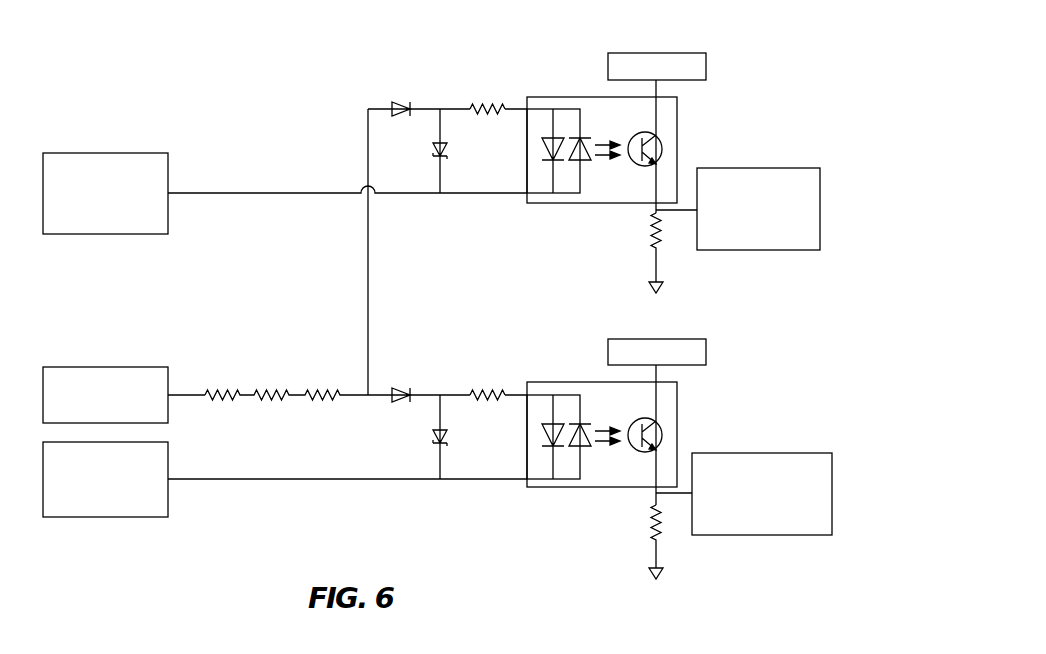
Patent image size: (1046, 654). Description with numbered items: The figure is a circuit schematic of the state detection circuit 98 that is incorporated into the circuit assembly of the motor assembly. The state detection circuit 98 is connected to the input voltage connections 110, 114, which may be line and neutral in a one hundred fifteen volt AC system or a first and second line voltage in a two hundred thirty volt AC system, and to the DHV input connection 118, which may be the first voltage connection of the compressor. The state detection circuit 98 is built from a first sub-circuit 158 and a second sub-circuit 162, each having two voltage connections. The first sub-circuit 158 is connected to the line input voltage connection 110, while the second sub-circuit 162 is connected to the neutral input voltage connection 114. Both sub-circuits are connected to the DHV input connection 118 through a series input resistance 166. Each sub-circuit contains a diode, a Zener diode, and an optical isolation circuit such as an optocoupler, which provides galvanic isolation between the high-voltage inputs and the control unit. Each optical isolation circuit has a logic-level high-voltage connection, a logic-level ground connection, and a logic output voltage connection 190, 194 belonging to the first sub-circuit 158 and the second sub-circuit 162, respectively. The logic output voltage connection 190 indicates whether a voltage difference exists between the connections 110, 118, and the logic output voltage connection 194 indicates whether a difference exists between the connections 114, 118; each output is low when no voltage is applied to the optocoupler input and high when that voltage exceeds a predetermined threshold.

The state detection circuit 98 is at (138, 88).
The input voltage connection 110 is at (93, 506).
The input voltage connection 114 is at (125, 164).
The DHV input connection 118 is at (70, 373).
The first sub-circuit 158 is at (742, 345).
The second sub-circuit 162 is at (780, 67).
The series input resistance 166 is at (272, 350).
The logic output voltage connection 190 is at (772, 458).
The logic output voltage connection 194 is at (772, 170).